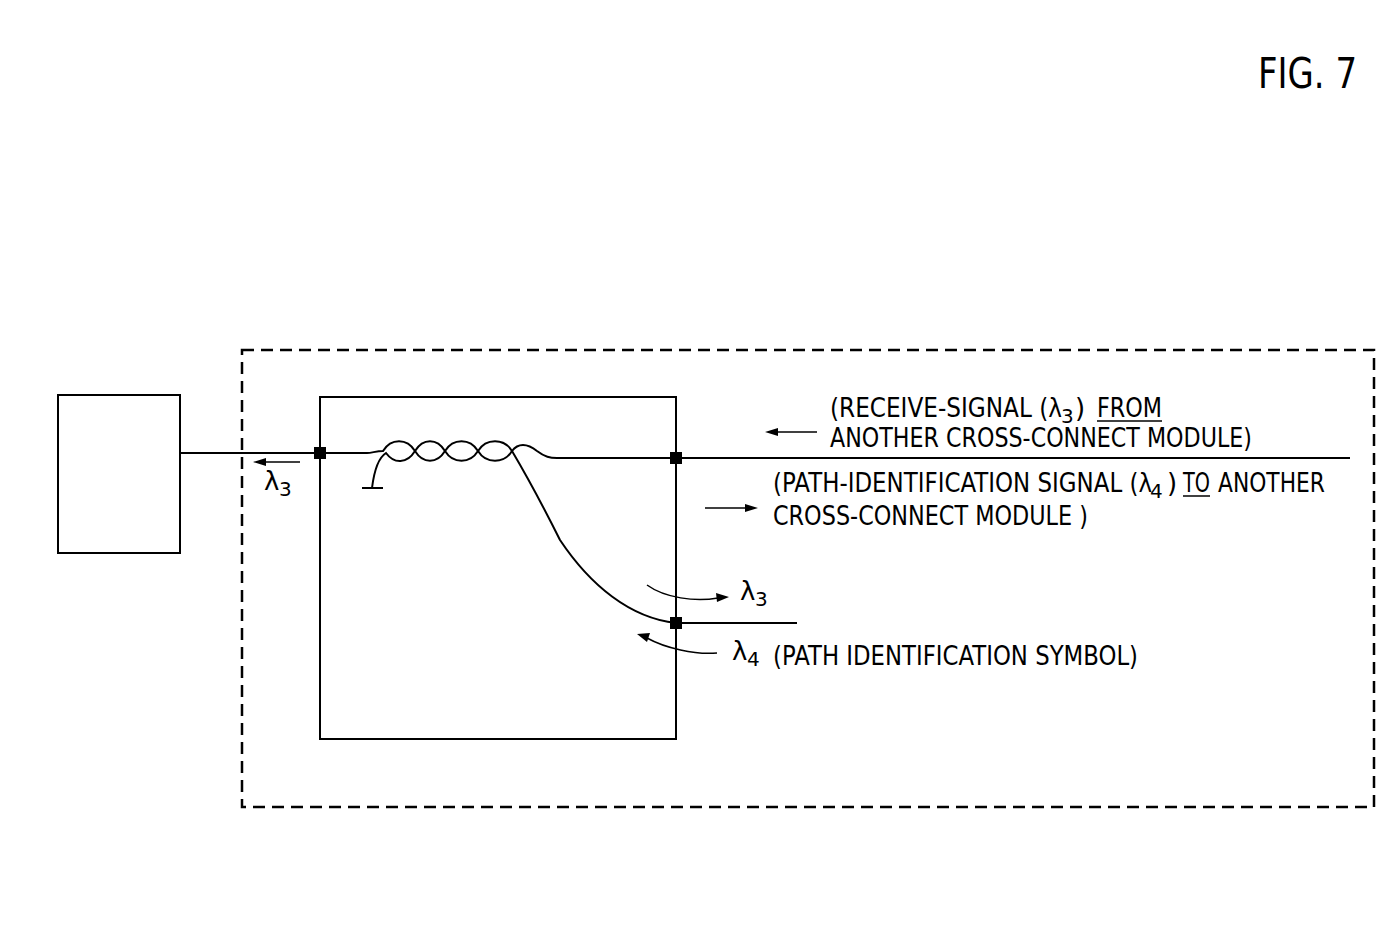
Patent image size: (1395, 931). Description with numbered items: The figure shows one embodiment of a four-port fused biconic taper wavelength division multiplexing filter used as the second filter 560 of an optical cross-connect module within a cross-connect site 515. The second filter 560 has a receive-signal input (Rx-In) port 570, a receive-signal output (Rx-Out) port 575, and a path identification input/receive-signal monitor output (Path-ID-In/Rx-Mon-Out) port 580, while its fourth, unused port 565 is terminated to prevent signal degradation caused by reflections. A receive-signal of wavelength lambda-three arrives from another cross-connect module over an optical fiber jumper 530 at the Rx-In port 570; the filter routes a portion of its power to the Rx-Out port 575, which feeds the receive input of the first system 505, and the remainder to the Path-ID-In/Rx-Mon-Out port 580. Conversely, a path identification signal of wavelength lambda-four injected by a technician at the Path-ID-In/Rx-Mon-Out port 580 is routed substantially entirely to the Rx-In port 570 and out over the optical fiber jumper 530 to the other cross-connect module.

The system-1 505 is at (119, 490).
The cross-connect site 515 is at (808, 578).
The optical fiber jumper 530 is at (745, 458).
The second filter 560 is at (498, 568).
The fourth, unused port 565 is at (376, 504).
The receive-signal input (Rx-In) port 570 is at (700, 441).
The receive-signal output (Rx-Out) port 575 is at (292, 439).
The path identification input/receive-signal monitor output (Path-ID-In/Rx-Mon-Out) 580 is at (760, 623).